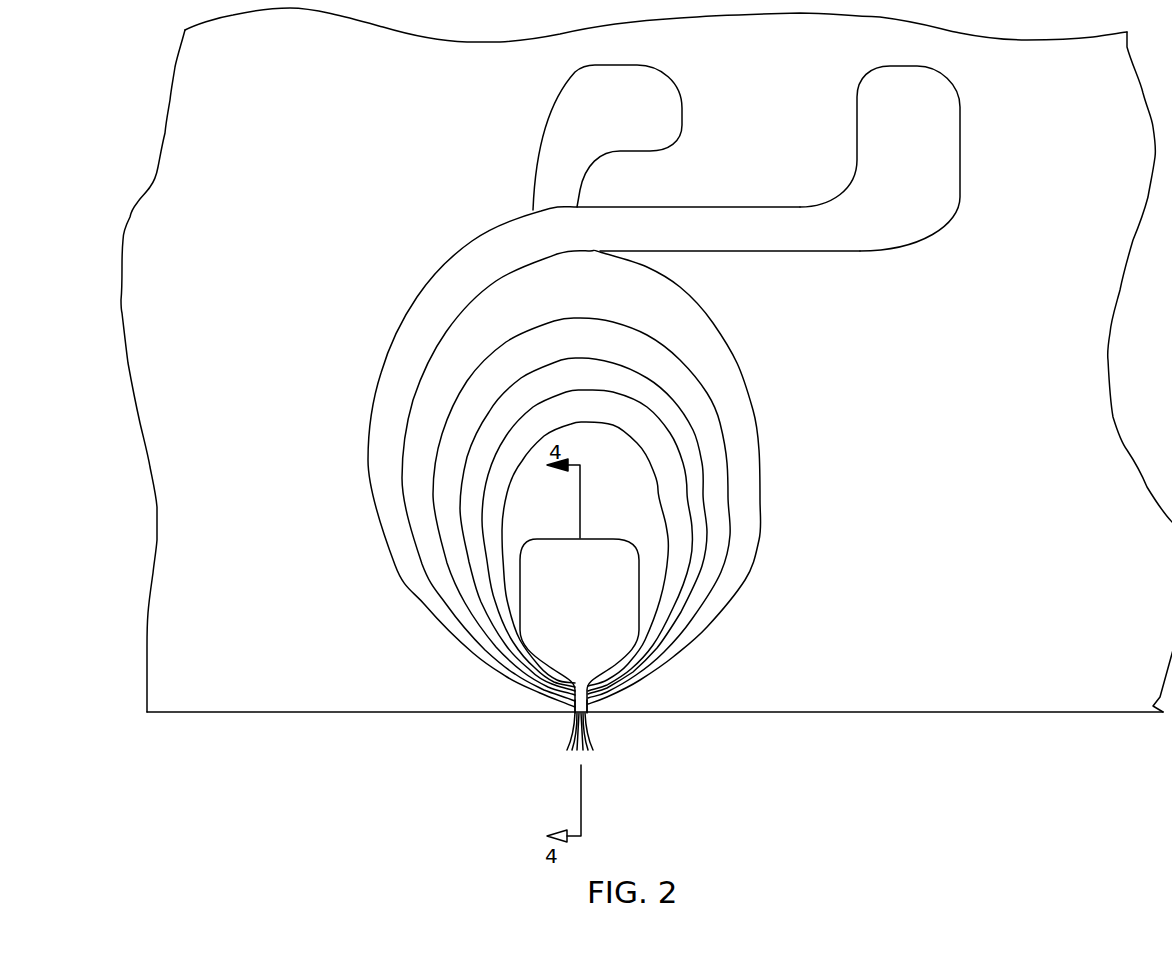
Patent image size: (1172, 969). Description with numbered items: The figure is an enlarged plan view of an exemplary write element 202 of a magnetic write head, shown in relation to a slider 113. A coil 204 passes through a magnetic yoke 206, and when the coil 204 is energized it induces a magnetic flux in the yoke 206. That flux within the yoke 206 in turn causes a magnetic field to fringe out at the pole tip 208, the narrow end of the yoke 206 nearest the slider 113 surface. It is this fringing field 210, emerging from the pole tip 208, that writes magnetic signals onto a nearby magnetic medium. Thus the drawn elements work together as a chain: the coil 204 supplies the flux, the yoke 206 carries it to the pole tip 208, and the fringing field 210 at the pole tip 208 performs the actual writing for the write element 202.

The write element 202 is at (968, 668).
The coil 204 is at (758, 458).
The magnetic yoke 206 is at (600, 541).
The pole tip 208 is at (588, 712).
The fringing field 210 is at (590, 742).
The slider 113 is at (472, 762).